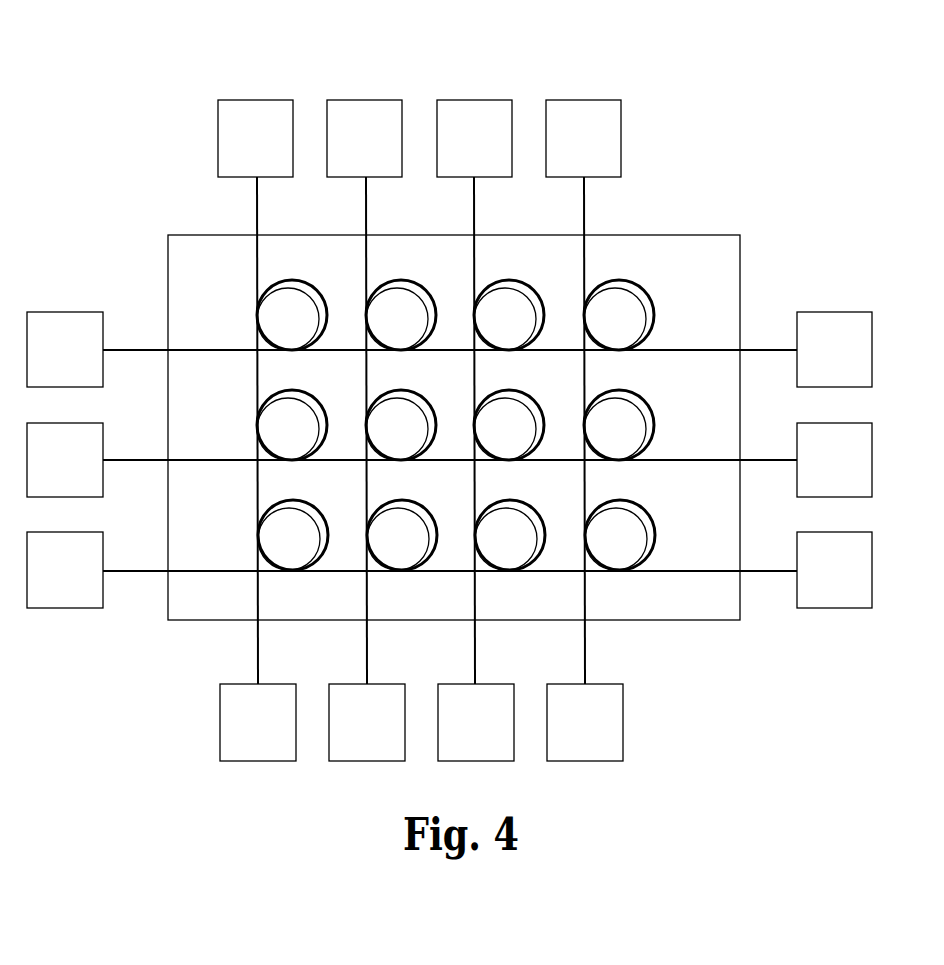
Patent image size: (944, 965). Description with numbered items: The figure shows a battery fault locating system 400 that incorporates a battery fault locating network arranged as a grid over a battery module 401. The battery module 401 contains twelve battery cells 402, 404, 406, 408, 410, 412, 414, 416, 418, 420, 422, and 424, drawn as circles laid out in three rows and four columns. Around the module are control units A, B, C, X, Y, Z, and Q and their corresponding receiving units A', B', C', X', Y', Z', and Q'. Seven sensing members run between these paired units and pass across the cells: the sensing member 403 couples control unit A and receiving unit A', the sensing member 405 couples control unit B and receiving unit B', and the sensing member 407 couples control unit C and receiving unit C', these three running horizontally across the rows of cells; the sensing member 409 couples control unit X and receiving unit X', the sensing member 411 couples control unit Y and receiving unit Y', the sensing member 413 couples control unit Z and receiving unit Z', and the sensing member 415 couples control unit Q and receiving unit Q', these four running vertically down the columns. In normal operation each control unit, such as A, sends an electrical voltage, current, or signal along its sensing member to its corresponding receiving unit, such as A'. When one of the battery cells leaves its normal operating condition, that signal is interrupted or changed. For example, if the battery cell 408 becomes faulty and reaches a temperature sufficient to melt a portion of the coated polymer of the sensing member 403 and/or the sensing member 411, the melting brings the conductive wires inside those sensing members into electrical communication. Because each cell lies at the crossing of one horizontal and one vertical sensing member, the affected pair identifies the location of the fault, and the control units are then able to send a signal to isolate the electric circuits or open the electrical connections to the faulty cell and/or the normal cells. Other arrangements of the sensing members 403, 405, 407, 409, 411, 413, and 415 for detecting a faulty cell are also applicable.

The battery fault locating system 400 is at (93, 53).
The battery module 401 is at (187, 284).
The battery cell 402 is at (267, 332).
The sensing member 403 is at (140, 348).
The battery cell 404 is at (267, 442).
The sensing member 405 is at (146, 458).
The battery cell 406 is at (268, 552).
The sensing member 407 is at (151, 569).
The battery cell 408 is at (376, 332).
The sensing member 409 is at (256, 200).
The battery cell 410 is at (376, 442).
The sensing member 411 is at (365, 200).
The battery cell 412 is at (377, 552).
The sensing member 413 is at (473, 200).
The battery cell 414 is at (484, 332).
The sensing member 415 is at (583, 200).
The battery cell 416 is at (484, 442).
The battery cell 418 is at (485, 552).
The battery cell 420 is at (594, 332).
The battery cell 422 is at (594, 442).
The battery cell 424 is at (595, 552).